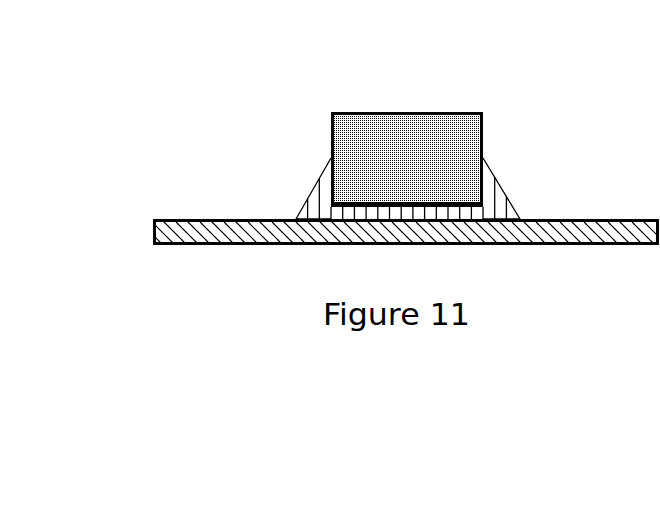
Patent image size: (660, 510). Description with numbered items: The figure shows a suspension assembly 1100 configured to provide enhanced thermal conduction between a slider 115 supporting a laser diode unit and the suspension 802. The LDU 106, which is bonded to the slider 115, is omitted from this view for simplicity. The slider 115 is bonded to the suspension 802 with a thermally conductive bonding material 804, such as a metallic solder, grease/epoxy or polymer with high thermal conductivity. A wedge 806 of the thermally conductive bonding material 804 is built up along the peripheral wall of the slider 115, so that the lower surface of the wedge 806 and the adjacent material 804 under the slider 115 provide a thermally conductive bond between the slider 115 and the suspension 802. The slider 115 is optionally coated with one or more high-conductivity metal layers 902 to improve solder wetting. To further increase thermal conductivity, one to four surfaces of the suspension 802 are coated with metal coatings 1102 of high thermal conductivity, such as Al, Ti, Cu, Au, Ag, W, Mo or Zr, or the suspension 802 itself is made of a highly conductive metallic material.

The semiconductor package assembly 1100 is at (491, 80).
The LDU 106 is at (317, 105).
The slider 115 is at (395, 112).
The metal layers 902 is at (331, 139).
The wedge 806 is at (317, 198).
The thermally conductive bonding material 804 is at (370, 210).
The metal coatings 1102 is at (566, 219).
The suspension 802 is at (612, 232).